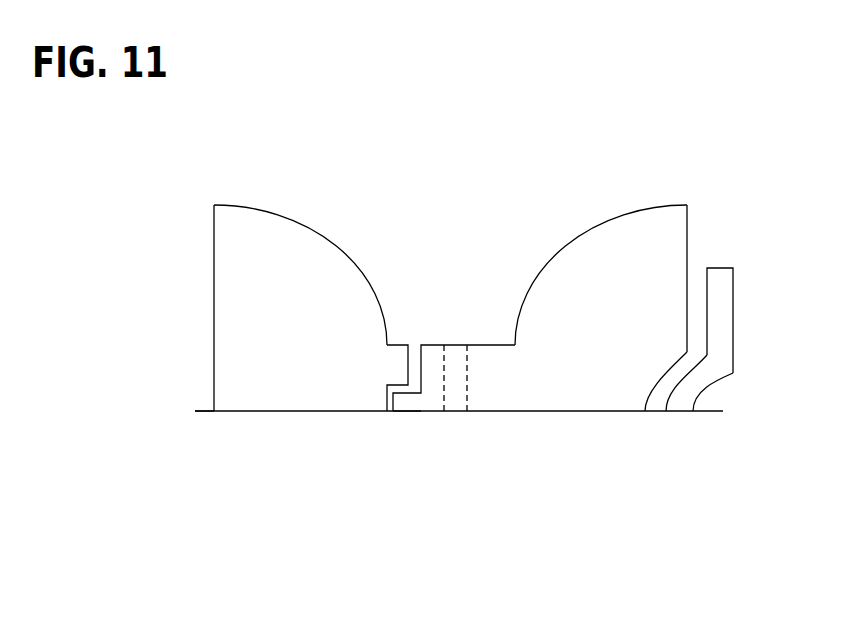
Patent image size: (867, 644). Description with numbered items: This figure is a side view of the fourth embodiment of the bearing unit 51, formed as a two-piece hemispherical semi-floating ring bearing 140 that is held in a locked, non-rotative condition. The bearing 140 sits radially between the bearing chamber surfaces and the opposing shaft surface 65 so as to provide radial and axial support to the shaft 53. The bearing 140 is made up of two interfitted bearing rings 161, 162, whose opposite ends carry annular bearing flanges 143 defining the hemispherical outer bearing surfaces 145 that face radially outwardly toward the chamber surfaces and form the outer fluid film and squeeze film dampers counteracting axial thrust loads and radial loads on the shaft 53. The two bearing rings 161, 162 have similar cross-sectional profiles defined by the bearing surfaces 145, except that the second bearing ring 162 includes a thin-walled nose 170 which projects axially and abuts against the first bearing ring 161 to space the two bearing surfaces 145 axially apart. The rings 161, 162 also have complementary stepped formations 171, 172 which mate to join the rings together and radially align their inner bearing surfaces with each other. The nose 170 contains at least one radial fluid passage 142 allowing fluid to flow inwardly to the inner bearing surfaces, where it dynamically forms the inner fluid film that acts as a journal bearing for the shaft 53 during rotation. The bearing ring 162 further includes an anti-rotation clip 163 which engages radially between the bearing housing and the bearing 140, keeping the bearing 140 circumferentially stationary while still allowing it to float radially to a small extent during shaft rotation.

The semi-floating ring bearing 140 is at (144, 198).
The bearing unit 51 is at (199, 182).
The outer hemispherical bearing surfaces 145 is at (233, 205).
The annular bearing flanges 143 is at (227, 256).
The radial fluid passage 142 is at (458, 347).
The stepped formation 172 is at (398, 353).
The stepped formation 171 is at (415, 413).
The thin-walled nose 170 is at (478, 400).
The first bearing ring 161 is at (262, 388).
The second bearing ring 162 is at (547, 375).
The anti-rotation clip 163 is at (723, 315).
The shaft surface 65 is at (204, 410).
The shaft 53 is at (218, 415).